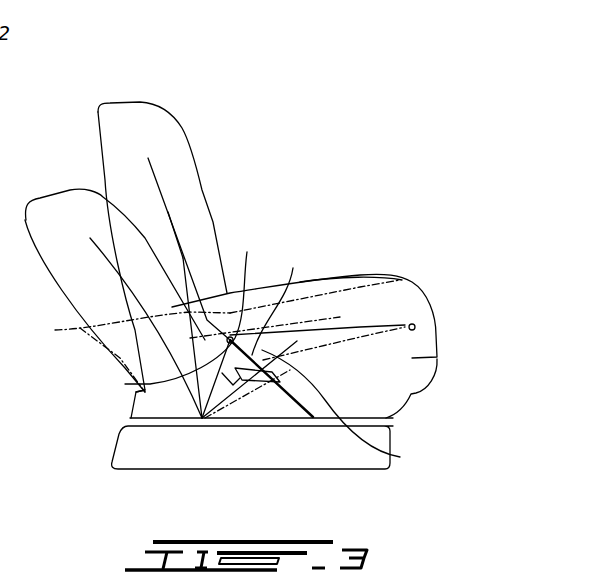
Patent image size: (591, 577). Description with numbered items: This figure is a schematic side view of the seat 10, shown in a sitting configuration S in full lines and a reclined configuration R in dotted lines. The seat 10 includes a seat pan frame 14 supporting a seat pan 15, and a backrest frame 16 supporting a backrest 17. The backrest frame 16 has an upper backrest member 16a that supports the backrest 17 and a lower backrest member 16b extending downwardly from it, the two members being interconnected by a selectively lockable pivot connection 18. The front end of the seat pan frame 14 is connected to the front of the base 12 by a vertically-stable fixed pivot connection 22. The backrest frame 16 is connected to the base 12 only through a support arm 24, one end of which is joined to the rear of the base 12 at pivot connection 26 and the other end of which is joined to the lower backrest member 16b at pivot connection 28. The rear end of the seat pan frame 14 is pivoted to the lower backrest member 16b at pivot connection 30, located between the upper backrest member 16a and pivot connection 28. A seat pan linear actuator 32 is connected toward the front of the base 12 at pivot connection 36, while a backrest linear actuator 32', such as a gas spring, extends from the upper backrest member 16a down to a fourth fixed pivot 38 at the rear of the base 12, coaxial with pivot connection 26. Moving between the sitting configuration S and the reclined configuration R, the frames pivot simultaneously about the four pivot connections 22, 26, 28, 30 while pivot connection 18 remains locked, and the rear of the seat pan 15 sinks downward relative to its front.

The seat 10 is at (318, 108).
The base 12 is at (142, 428).
The seat pan frame 14 is at (348, 327).
The seat pan 15 is at (398, 290).
The backrest frame 16 is at (174, 176).
The upper backrest member 16a is at (178, 225).
The lower backrest member 16b is at (285, 301).
The backrest 17 is at (162, 132).
The selectively lockable pivot connection 18 is at (138, 390).
The pivot connection 22 is at (415, 327).
The support arm 24 is at (233, 386).
The pivot connection 26 is at (202, 420).
The pivot connection 28 is at (400, 457).
The pivot connection 30 is at (198, 307).
The seat pan linear actuator 32 is at (254, 438).
The backrest linear actuator 32' is at (107, 303).
The pivot connection 36 is at (312, 418).
The fourth fixed pivot 38 is at (247, 394).
The sitting configuration S is at (127, 92).
The reclined configuration R is at (42, 182).